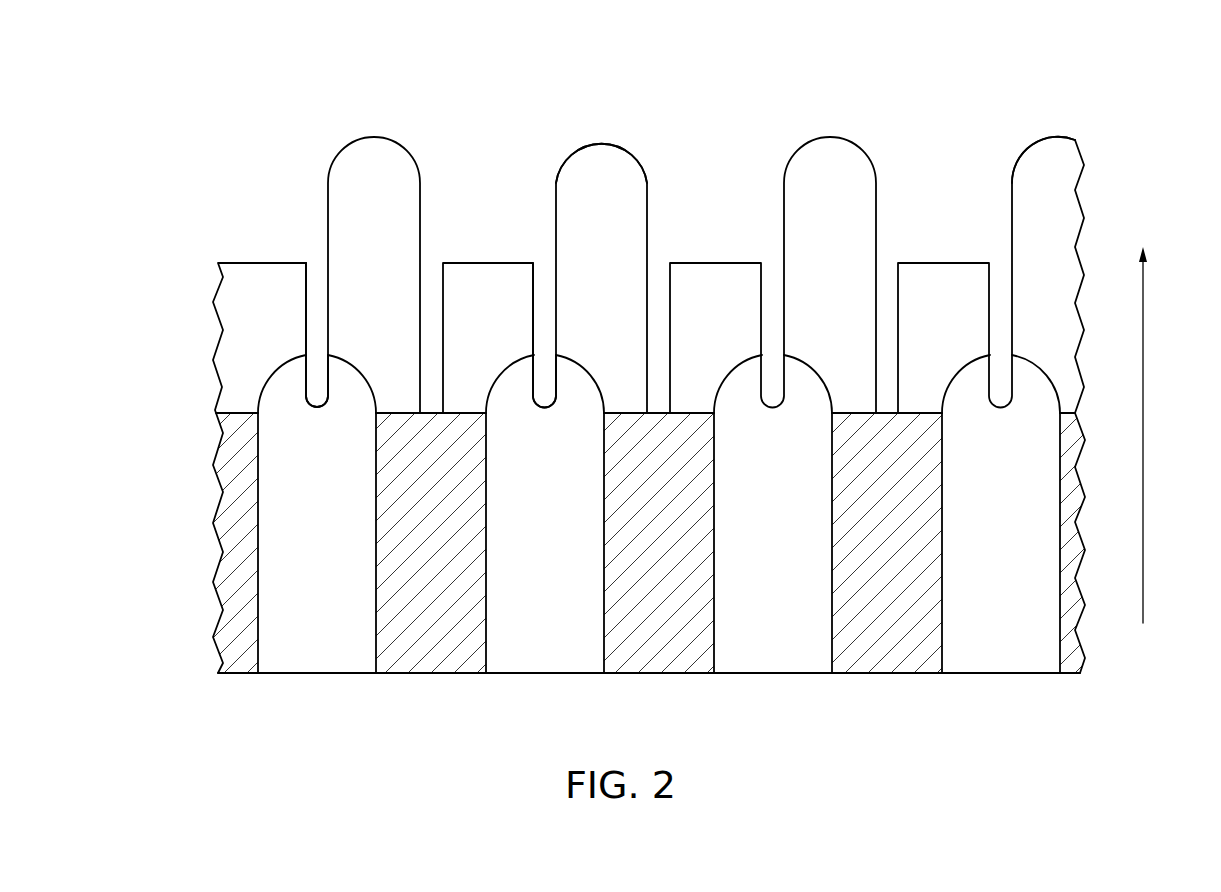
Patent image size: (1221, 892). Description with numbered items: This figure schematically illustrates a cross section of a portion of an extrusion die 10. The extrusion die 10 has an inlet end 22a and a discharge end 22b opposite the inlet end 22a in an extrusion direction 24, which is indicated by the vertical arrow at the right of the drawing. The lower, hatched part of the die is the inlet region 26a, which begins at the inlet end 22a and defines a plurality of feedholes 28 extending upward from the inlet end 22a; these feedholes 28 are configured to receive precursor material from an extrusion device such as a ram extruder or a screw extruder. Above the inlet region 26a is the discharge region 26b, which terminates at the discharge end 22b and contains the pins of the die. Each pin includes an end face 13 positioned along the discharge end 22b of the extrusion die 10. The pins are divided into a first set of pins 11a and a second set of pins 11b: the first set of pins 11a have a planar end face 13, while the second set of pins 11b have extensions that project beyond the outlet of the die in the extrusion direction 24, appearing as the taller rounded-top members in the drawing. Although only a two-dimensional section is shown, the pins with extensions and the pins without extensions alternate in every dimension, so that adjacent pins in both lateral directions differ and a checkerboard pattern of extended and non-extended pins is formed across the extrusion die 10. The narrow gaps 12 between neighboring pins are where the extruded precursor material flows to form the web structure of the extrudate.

The extrusion die 10 is at (160, 151).
The first set of pins 11a is at (536, 270).
The second set of pins 11b is at (640, 157).
The trench 12 is at (318, 260).
The end face 13 is at (488, 262).
The inlet end 22a is at (885, 673).
The discharge end 22b is at (960, 160).
The extrusion direction 24 is at (1143, 433).
The inlet region 26a is at (185, 413).
The discharge region 26b is at (185, 263).
The feedholes 28 is at (316, 668).